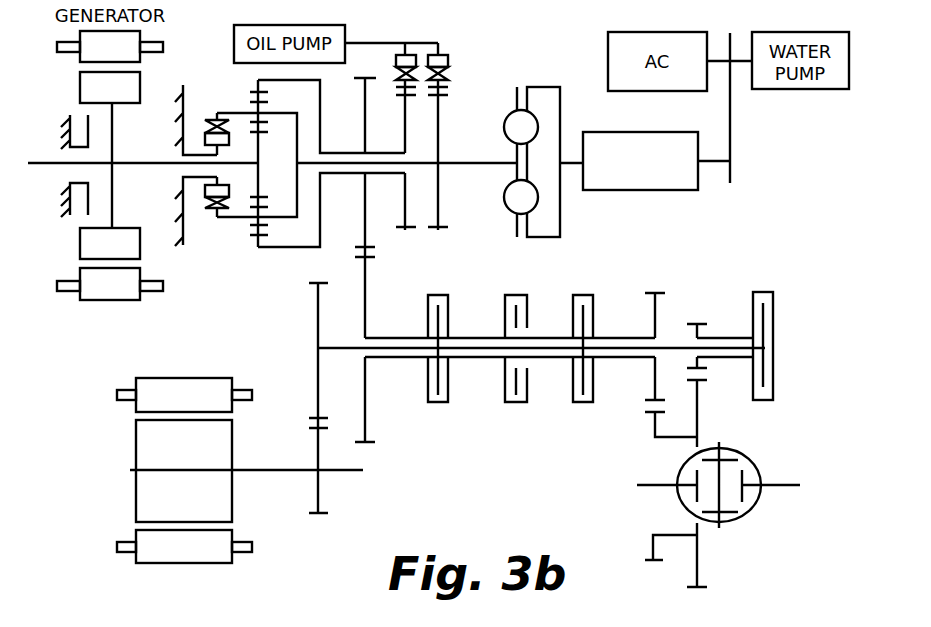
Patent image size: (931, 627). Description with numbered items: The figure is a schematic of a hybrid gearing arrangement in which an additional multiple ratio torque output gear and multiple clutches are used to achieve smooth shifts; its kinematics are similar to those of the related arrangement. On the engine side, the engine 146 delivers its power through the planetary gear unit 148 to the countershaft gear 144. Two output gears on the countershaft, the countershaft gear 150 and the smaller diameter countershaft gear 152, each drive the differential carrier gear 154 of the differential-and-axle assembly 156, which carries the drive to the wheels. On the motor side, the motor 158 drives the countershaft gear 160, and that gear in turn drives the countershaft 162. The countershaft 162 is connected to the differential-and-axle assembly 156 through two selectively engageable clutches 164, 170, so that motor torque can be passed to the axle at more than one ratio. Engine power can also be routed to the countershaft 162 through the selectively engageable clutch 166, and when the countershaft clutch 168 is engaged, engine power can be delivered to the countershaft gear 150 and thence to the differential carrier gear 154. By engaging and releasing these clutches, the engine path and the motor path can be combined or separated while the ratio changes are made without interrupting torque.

The countershaft gear 144 is at (367, 290).
The engine 146 is at (670, 190).
The planetary gear unit 148 is at (249, 107).
The countershaft gear 150 is at (662, 298).
The smaller diameter countershaft gear 152 is at (700, 323).
The differential carrier gear 154 is at (697, 563).
The differential-and-axle assembly 156 is at (754, 462).
The motor 158 is at (147, 443).
The countershaft gear 160 is at (318, 332).
The countershaft 162 is at (665, 358).
The selectively engageable clutch 164 is at (774, 384).
The selectively engageable clutch 166 is at (438, 403).
The countershaft clutch 168 is at (527, 302).
The selectively engageable clutch 170 is at (594, 302).